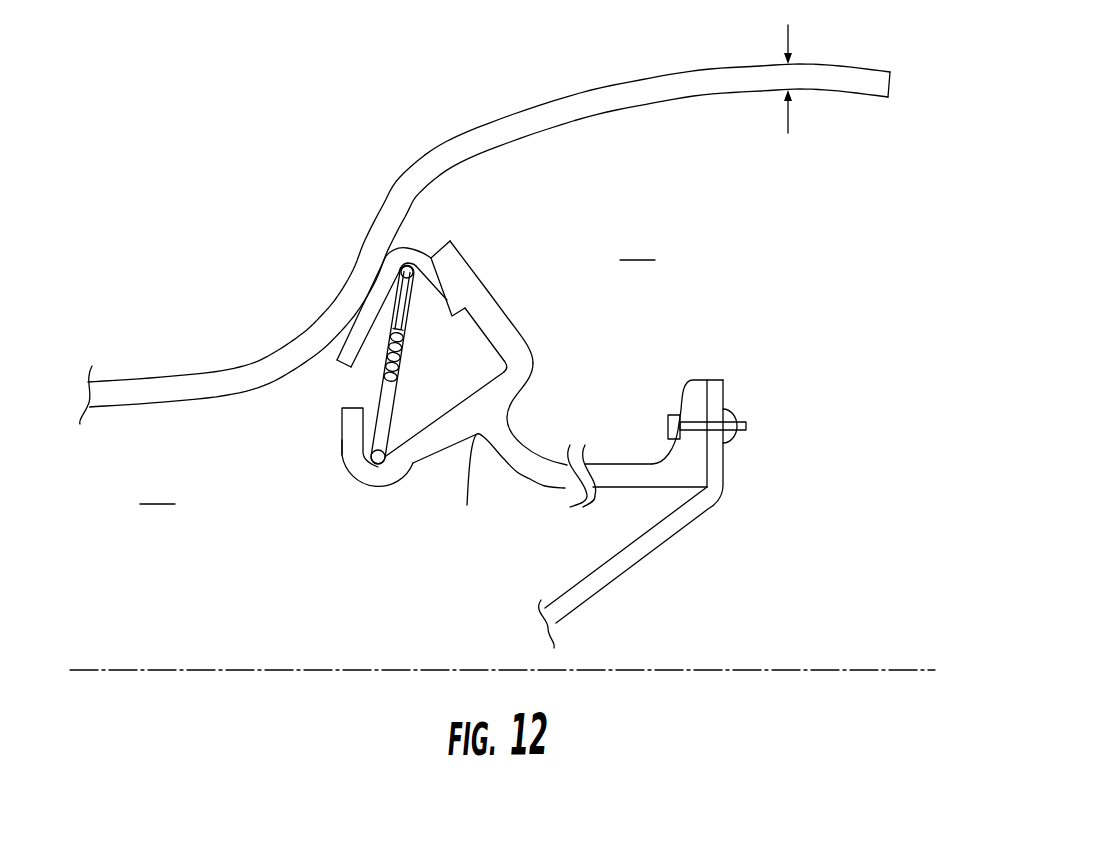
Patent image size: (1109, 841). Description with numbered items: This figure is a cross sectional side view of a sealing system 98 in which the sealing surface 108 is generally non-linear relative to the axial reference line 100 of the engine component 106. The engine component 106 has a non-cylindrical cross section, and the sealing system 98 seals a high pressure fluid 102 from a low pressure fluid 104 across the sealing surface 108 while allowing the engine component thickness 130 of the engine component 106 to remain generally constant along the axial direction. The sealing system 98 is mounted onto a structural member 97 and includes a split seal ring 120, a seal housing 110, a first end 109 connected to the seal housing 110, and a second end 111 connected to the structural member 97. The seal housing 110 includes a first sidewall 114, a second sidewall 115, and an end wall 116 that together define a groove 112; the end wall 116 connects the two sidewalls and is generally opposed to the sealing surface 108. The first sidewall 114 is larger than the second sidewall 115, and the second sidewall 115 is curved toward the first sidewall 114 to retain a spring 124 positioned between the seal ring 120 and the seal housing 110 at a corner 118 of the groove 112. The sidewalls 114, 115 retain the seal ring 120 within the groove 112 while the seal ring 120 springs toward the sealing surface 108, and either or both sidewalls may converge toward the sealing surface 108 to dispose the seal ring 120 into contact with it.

The structural member 97 is at (668, 546).
The sealing system 98 is at (324, 68).
The axial reference line 100 is at (240, 668).
The high pressure fluid 102 is at (157, 488).
The low pressure fluid 104 is at (637, 244).
The engine component 106 is at (178, 381).
The sealing surface 108 is at (282, 386).
The first end 109 is at (513, 452).
The seal housing 110 is at (467, 505).
The second end 111 is at (617, 486).
The groove 112 is at (465, 366).
The first sidewall 114 is at (482, 340).
The second sidewall 115 is at (348, 405).
The end wall 116 is at (410, 430).
The corner 118 is at (364, 488).
The split seal ring 120 is at (411, 248).
The spring 124 is at (342, 473).
The engine component thickness 130 is at (788, 118).